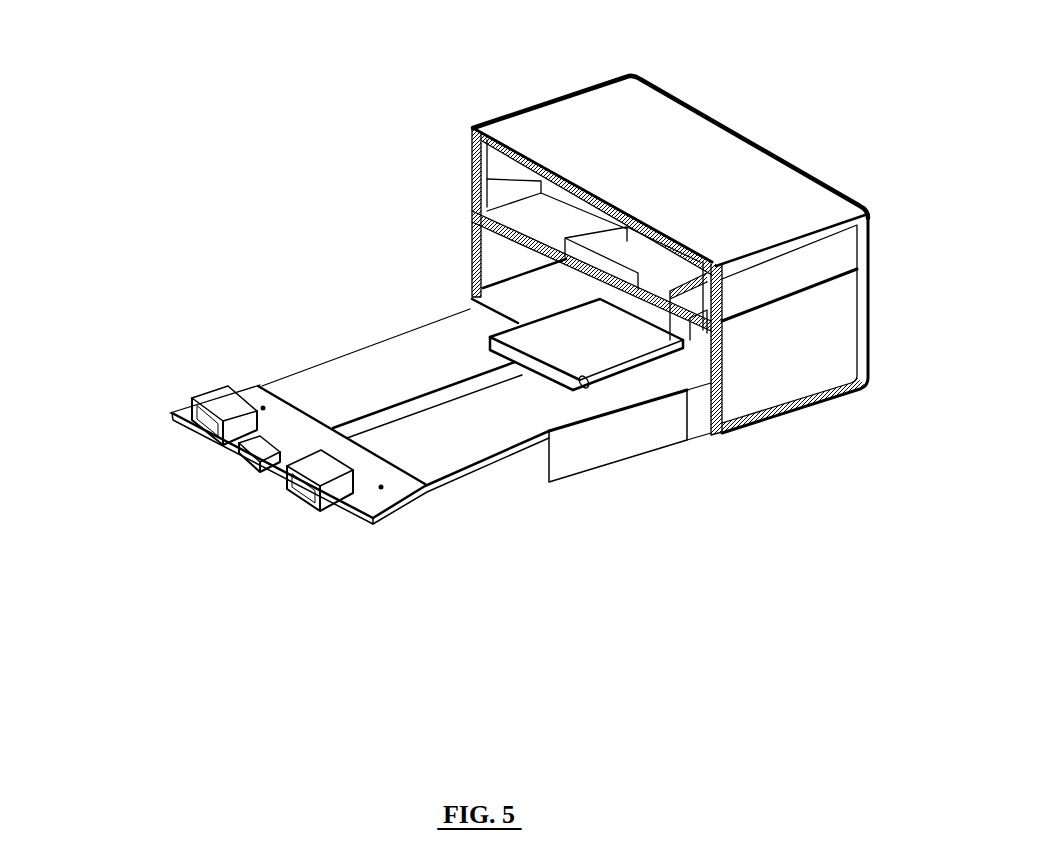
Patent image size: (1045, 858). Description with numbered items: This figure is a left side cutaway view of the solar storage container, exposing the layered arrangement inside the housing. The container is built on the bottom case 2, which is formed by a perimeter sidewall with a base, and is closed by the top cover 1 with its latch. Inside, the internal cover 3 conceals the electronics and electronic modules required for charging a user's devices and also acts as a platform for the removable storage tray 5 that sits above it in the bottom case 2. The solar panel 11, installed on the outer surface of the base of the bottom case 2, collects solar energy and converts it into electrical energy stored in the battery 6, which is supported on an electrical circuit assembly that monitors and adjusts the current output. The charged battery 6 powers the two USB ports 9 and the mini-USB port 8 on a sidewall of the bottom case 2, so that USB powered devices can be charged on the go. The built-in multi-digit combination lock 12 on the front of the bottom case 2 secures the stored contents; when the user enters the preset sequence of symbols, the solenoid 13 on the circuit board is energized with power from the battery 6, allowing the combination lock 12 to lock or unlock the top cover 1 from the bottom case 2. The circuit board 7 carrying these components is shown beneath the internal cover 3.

The top cover 1 is at (633, 78).
The bottom case 2 is at (866, 380).
The internal cover 3 is at (470, 207).
The removable storage tray 5 is at (704, 268).
The battery 6 is at (522, 337).
The circuit board 7 is at (263, 408).
The mini-USB port 8 is at (243, 460).
The USB ports 9 is at (190, 427).
The solar panel 11 is at (457, 493).
The combination lock 12 is at (548, 482).
The solenoid 13 is at (716, 372).